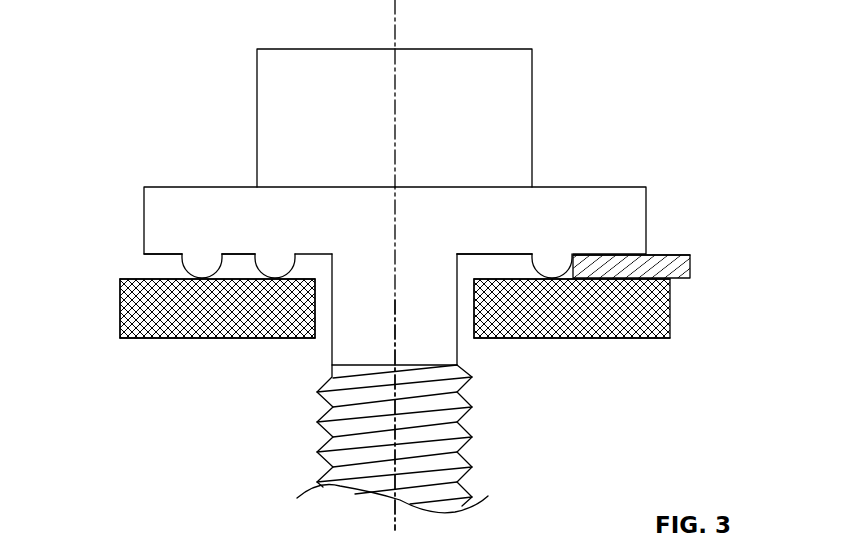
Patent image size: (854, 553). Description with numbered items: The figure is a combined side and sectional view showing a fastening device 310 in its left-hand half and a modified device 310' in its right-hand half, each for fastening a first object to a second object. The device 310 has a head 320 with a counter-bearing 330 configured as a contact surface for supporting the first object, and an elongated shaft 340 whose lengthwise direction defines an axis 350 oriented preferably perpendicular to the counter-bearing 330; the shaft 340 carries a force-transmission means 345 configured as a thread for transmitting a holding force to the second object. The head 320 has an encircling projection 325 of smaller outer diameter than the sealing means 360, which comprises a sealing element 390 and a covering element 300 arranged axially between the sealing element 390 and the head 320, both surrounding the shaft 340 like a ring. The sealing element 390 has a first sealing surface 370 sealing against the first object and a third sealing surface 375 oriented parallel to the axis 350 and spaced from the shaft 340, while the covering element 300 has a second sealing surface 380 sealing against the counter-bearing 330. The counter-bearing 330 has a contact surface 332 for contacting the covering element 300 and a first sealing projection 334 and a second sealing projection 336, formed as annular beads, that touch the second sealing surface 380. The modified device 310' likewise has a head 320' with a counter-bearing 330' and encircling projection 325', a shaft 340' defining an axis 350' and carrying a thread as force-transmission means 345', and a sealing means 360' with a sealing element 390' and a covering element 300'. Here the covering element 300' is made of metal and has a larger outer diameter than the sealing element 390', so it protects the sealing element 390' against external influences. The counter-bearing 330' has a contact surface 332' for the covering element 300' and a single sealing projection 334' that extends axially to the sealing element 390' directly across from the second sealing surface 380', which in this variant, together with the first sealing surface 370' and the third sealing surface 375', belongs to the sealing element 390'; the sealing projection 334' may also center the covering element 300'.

The covering element 300 is at (191, 342).
The covering element 300' is at (667, 276).
The device 310 is at (88, 44).
The modified device 310' is at (755, 44).
The head 320 is at (290, 112).
The head 320' is at (502, 115).
The encircling projection 325 is at (234, 216).
The encircling projection 325' is at (560, 218).
The counter-bearing 330 is at (122, 240).
The counter-bearing 330' is at (661, 238).
The contact surface 332 is at (215, 192).
The contact surface 332' is at (542, 337).
The first sealing projection 334 is at (252, 203).
The sealing projection 334' is at (600, 191).
The second sealing projection 336 is at (200, 268).
The shaft 340 is at (311, 353).
The shaft 340' is at (477, 353).
The force-transmission means 345 is at (341, 437).
The force-transmission means 345' is at (436, 439).
The axis 350 is at (465, 265).
The axis 350' is at (414, 271).
The sealing means 360 is at (114, 406).
The sealing means 360' is at (769, 210).
The first sealing surface 370 is at (192, 355).
The first sealing surface 370' is at (602, 376).
The third sealing surface 375 is at (282, 342).
The third sealing surface 375' is at (499, 342).
The second sealing surface 380 is at (176, 269).
The second sealing surface 380' is at (572, 204).
The sealing element 390 is at (180, 308).
The sealing element 390' is at (609, 308).